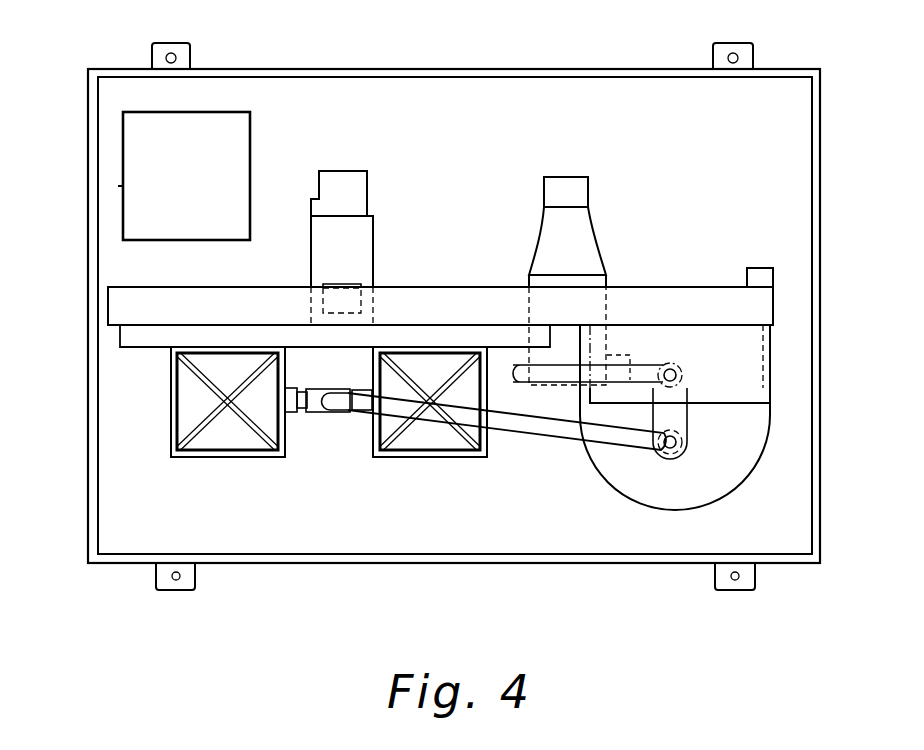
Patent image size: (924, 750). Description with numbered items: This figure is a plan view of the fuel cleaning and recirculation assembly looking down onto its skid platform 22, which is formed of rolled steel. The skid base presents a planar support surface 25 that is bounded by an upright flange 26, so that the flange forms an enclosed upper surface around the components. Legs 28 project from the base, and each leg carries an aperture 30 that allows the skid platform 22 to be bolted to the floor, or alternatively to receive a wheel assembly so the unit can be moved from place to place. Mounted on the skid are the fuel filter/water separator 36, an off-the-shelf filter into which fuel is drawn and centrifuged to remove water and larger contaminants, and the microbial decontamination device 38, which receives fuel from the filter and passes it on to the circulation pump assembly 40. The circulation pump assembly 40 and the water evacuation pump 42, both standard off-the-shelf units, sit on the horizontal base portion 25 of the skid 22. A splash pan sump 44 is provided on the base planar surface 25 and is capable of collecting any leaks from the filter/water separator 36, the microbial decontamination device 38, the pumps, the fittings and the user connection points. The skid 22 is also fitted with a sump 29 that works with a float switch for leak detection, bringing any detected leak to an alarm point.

The skid platform 22 is at (790, 390).
The planar support surface 25 is at (742, 186).
The upright flange 26 is at (820, 535).
The legs 28 is at (755, 577).
The sump 29 is at (228, 133).
The aperture 30 is at (717, 578).
The fuel filter/water separator 36 is at (197, 459).
The microbial decontamination device 38 is at (745, 448).
The circulation pump assembly 40 is at (585, 182).
The water evacuation pump 42 is at (357, 177).
The splash pan sump 44 is at (123, 186).